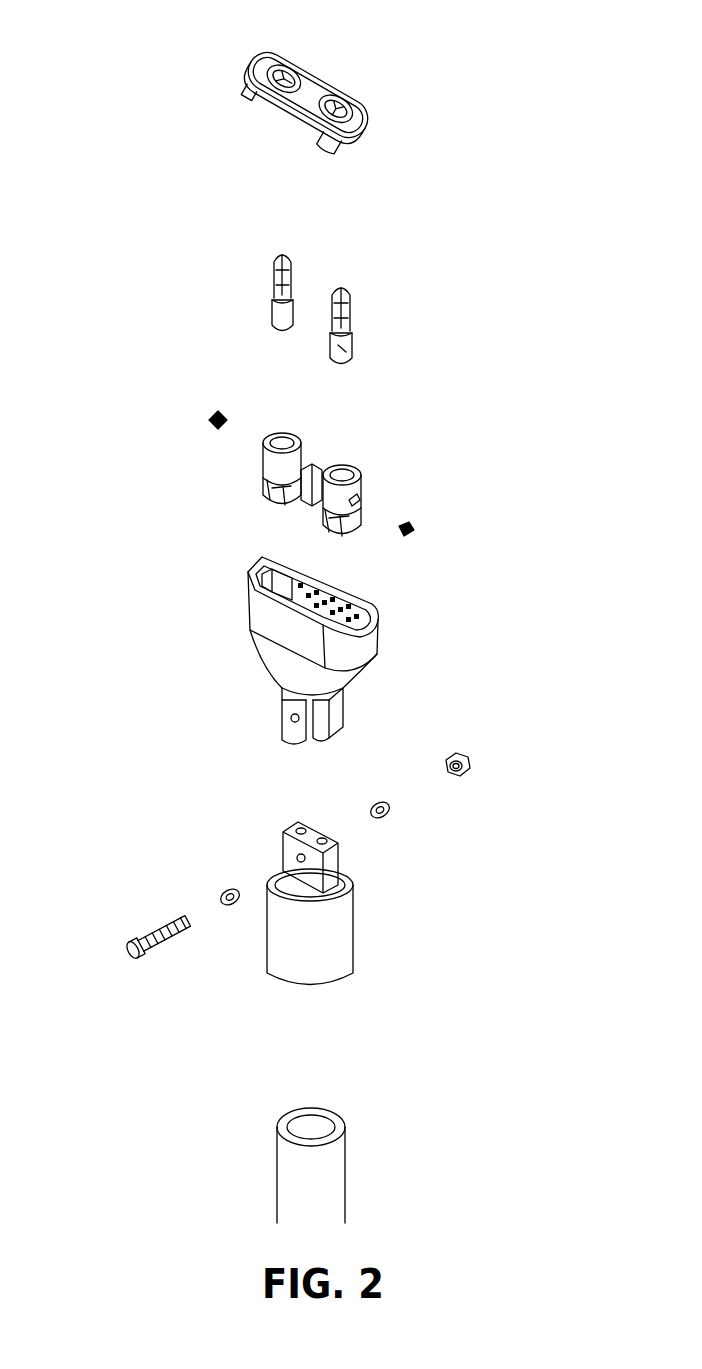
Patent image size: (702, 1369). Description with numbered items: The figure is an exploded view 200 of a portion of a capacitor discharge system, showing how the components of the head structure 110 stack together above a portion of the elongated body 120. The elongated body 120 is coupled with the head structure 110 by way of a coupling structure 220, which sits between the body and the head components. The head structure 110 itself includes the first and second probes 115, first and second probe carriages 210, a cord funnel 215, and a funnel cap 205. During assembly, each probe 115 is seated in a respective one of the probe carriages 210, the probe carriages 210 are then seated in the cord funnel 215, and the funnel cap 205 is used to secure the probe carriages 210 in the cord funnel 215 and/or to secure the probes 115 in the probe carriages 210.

The exploded view 200 is at (129, 61).
The head structure 110 is at (490, 44).
The funnel cap 205 is at (372, 106).
The first and second probes 115 is at (352, 302).
The first and second probe carriages 210 is at (361, 490).
The cord funnel 215 is at (378, 640).
The coupling structure 220 is at (353, 928).
The elongated body 120 is at (345, 1172).